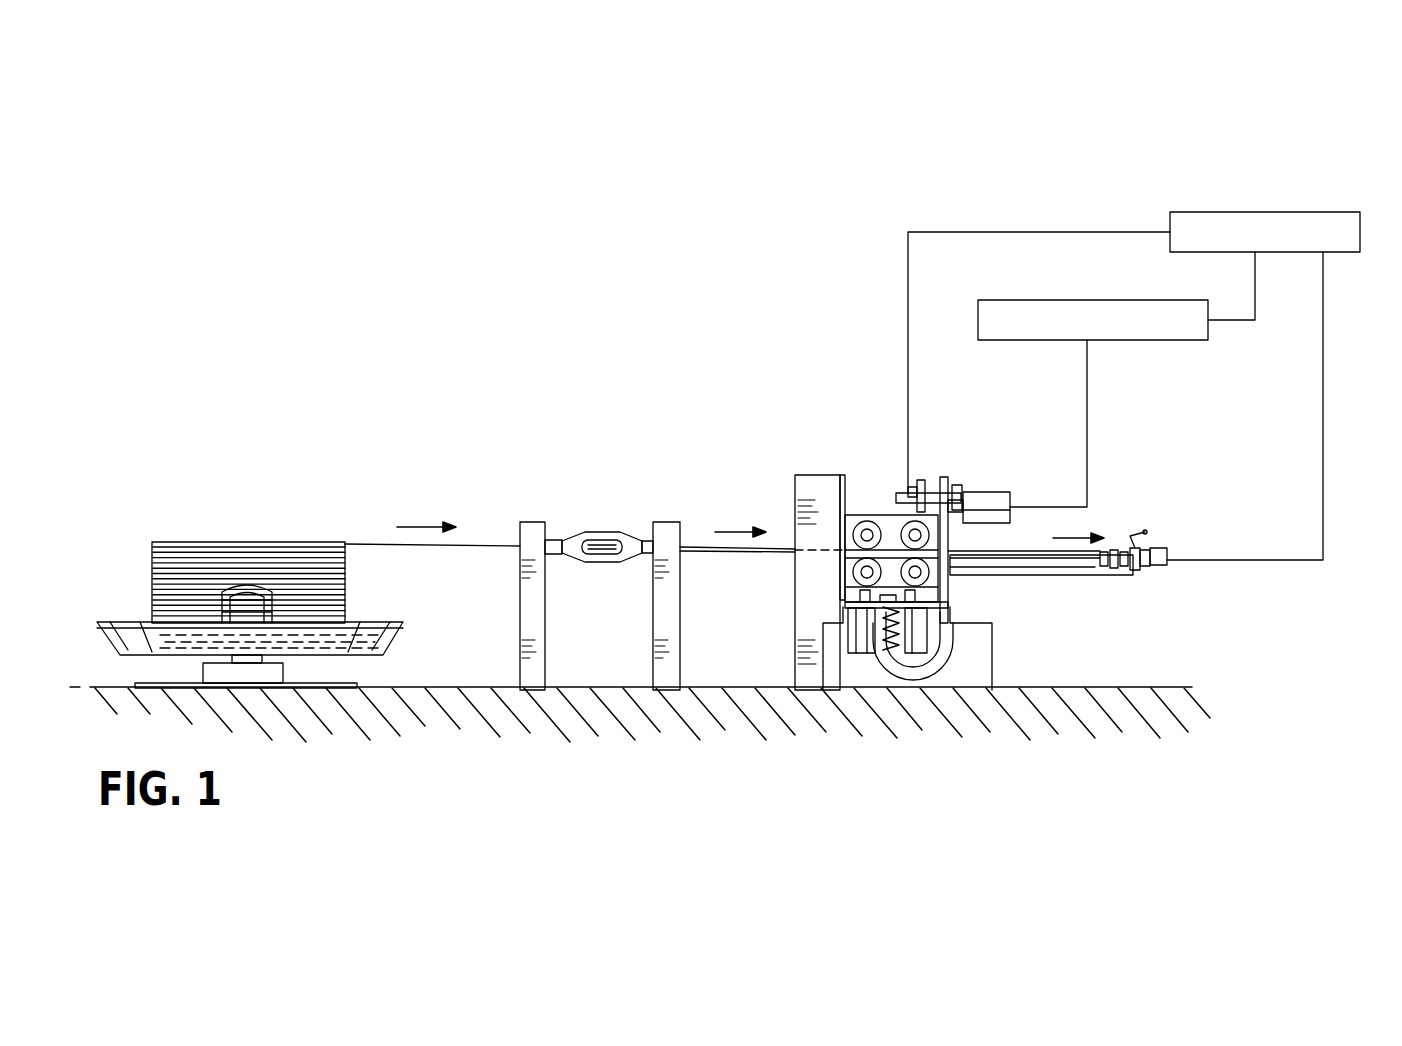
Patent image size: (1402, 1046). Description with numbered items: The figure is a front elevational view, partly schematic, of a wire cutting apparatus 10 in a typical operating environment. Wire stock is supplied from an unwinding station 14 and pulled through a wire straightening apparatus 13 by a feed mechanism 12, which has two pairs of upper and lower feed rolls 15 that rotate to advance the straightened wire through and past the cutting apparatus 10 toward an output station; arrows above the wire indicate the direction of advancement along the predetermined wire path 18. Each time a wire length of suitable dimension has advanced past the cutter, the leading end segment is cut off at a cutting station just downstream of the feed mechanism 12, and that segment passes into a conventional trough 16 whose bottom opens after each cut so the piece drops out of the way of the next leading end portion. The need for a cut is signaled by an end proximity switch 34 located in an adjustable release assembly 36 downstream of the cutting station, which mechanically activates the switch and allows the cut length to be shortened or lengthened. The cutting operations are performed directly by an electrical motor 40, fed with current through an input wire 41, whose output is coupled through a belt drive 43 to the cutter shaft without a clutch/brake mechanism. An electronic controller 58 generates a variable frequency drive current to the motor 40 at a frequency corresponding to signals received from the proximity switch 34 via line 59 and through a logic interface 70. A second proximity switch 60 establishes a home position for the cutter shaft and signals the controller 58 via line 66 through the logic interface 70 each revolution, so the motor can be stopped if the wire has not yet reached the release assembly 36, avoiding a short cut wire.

The cutting apparatus 10 is at (975, 455).
The feed mechanism 12 is at (868, 515).
The wire straightening apparatus 13 is at (608, 512).
The unwinding station 14 is at (85, 628).
The feed rolls 15 is at (898, 515).
The trough 16 is at (1018, 562).
The wire path 18 is at (1085, 575).
The end proximity switch 34 is at (1152, 548).
The adjustable release assembly 36 is at (1170, 576).
The electrical motor 40 is at (990, 503).
The input wire 41 is at (1012, 507).
The belt drive 43 is at (905, 495).
The electronic controller 58 is at (1095, 300).
The line 59 is at (1323, 425).
The proximity switch 60 is at (925, 488).
The line 66 is at (978, 232).
The logic interface 70 is at (1268, 212).